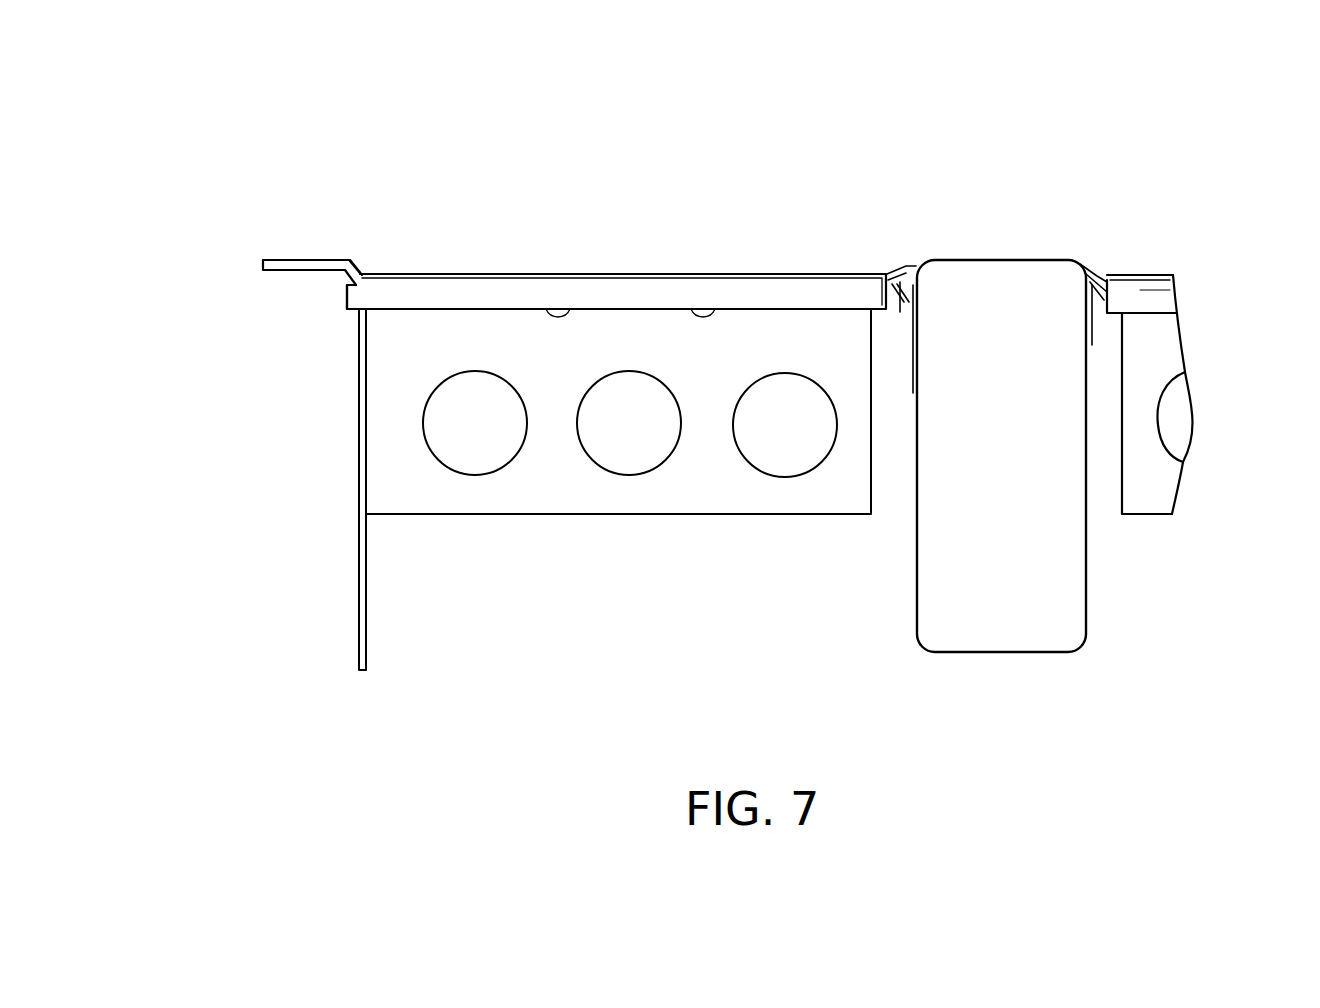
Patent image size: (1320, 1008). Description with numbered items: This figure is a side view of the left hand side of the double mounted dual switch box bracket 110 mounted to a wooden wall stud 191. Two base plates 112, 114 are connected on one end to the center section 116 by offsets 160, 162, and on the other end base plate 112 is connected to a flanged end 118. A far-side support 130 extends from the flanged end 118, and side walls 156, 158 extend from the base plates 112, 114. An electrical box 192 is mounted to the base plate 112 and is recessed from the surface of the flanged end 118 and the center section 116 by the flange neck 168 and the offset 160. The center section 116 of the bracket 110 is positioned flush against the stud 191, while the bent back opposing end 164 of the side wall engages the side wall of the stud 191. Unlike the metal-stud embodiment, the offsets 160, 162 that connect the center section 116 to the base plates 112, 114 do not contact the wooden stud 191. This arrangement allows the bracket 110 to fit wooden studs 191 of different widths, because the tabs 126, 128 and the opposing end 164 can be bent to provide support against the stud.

The double mounted dual switch box bracket 110 is at (355, 182).
The base plate 112 is at (848, 273).
The base plate 114 is at (1138, 275).
The center section 116 is at (999, 260).
The flanged end 118 is at (290, 260).
The tab 126 is at (903, 285).
The tab 128 is at (1090, 360).
The far-side support 130 is at (358, 563).
The side wall 156 is at (378, 291).
The side wall 158 is at (1143, 293).
The offset 160 is at (900, 268).
The offset 162 is at (1086, 268).
The opposing end 164 is at (908, 276).
The flange neck 168 is at (357, 264).
The wooden wall stud 191 is at (1003, 662).
The electrical box 192 is at (561, 515).